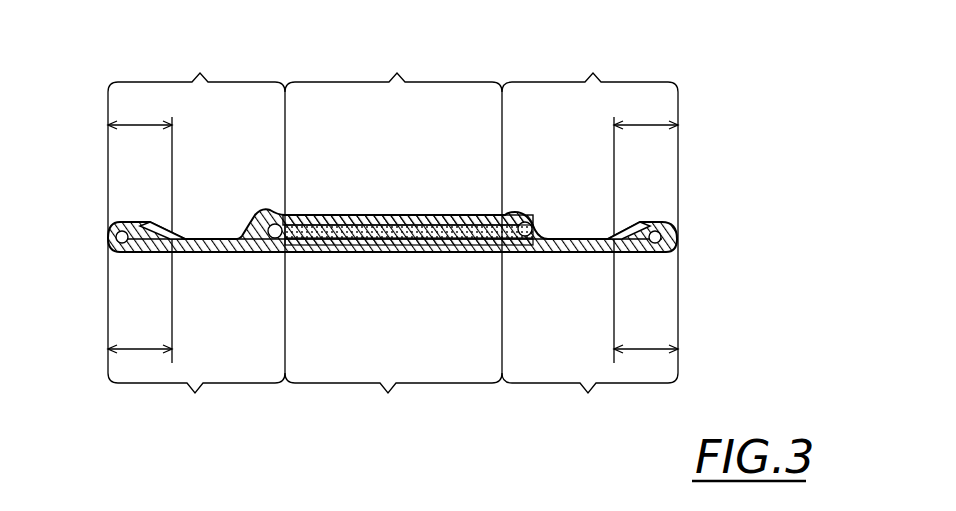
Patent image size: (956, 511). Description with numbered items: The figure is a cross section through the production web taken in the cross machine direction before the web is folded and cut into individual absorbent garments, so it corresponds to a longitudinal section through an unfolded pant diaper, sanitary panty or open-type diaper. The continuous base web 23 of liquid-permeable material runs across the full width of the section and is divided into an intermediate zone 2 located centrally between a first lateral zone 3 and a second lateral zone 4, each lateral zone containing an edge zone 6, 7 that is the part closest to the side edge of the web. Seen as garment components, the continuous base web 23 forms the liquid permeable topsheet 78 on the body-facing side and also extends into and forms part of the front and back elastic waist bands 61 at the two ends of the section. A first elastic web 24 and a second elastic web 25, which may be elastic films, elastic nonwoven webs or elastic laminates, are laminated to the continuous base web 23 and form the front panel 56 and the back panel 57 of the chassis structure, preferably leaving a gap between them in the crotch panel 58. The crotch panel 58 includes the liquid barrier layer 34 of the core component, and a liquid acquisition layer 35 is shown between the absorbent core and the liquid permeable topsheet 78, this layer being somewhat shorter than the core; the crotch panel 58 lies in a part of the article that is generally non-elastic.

The front panel 56 is at (182, 70).
The crotch panel 58 is at (379, 70).
The back panel 57 is at (613, 70).
The elastic waist band 61 is at (393, 230).
The first elastic web 24 is at (208, 236).
The liquid barrier layer 34 is at (382, 215).
The second elastic web 25 is at (572, 237).
The liquid acquisition layer 35 is at (322, 252).
The continuous base web 23 is at (385, 250).
The liquid permeable topsheet 78 is at (463, 250).
The first edge zone 6 is at (140, 336).
The second edge zone 7 is at (646, 336).
The first lateral zone 3 is at (167, 421).
The intermediate zone 2 is at (368, 421).
The second lateral zone 4 is at (603, 421).